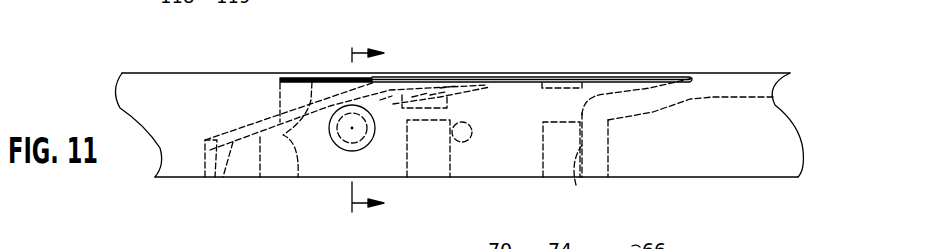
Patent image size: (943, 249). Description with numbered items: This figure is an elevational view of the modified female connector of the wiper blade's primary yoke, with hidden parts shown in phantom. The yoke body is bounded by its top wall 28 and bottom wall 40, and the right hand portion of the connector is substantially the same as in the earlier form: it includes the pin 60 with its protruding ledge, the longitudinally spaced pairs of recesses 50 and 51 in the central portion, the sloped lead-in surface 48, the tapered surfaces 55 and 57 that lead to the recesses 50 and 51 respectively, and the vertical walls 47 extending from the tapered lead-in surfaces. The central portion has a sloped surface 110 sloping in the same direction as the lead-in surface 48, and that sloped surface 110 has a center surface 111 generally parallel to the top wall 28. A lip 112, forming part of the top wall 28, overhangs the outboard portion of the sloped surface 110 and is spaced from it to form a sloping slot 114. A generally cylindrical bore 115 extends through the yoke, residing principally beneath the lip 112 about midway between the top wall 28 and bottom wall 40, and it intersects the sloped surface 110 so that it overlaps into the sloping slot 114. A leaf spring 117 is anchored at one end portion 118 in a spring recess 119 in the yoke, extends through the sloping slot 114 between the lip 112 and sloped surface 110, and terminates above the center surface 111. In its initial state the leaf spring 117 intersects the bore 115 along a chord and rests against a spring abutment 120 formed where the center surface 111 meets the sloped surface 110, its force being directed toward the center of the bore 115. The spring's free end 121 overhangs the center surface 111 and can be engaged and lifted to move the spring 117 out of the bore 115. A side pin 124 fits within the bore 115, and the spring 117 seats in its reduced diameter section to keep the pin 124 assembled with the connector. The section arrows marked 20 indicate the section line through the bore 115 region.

The section line 20- 20 is at (379, 127).
The top wall 28 is at (215, 73).
The bottom wall 40 is at (175, 177).
The vertical walls 47 is at (576, 185).
The sloped lead-in surface 48 is at (622, 92).
The recesses 50 is at (433, 163).
The recesses 51 is at (552, 165).
The tapered surfaces 55 is at (460, 104).
The tapered surfaces 57 is at (553, 88).
The pin 60 is at (472, 134).
The sloped surface 110 is at (312, 77).
The center surface 111 is at (437, 93).
The lip 112 is at (322, 77).
The sloping slot 114 is at (386, 96).
The bore 115 is at (365, 147).
The leaf spring 117 is at (420, 93).
The end portion 118 is at (210, 177).
The spring recess 119 is at (222, 177).
The spring abutment 120 is at (400, 95).
The free end 121 is at (446, 86).
The side pin 124 is at (345, 137).